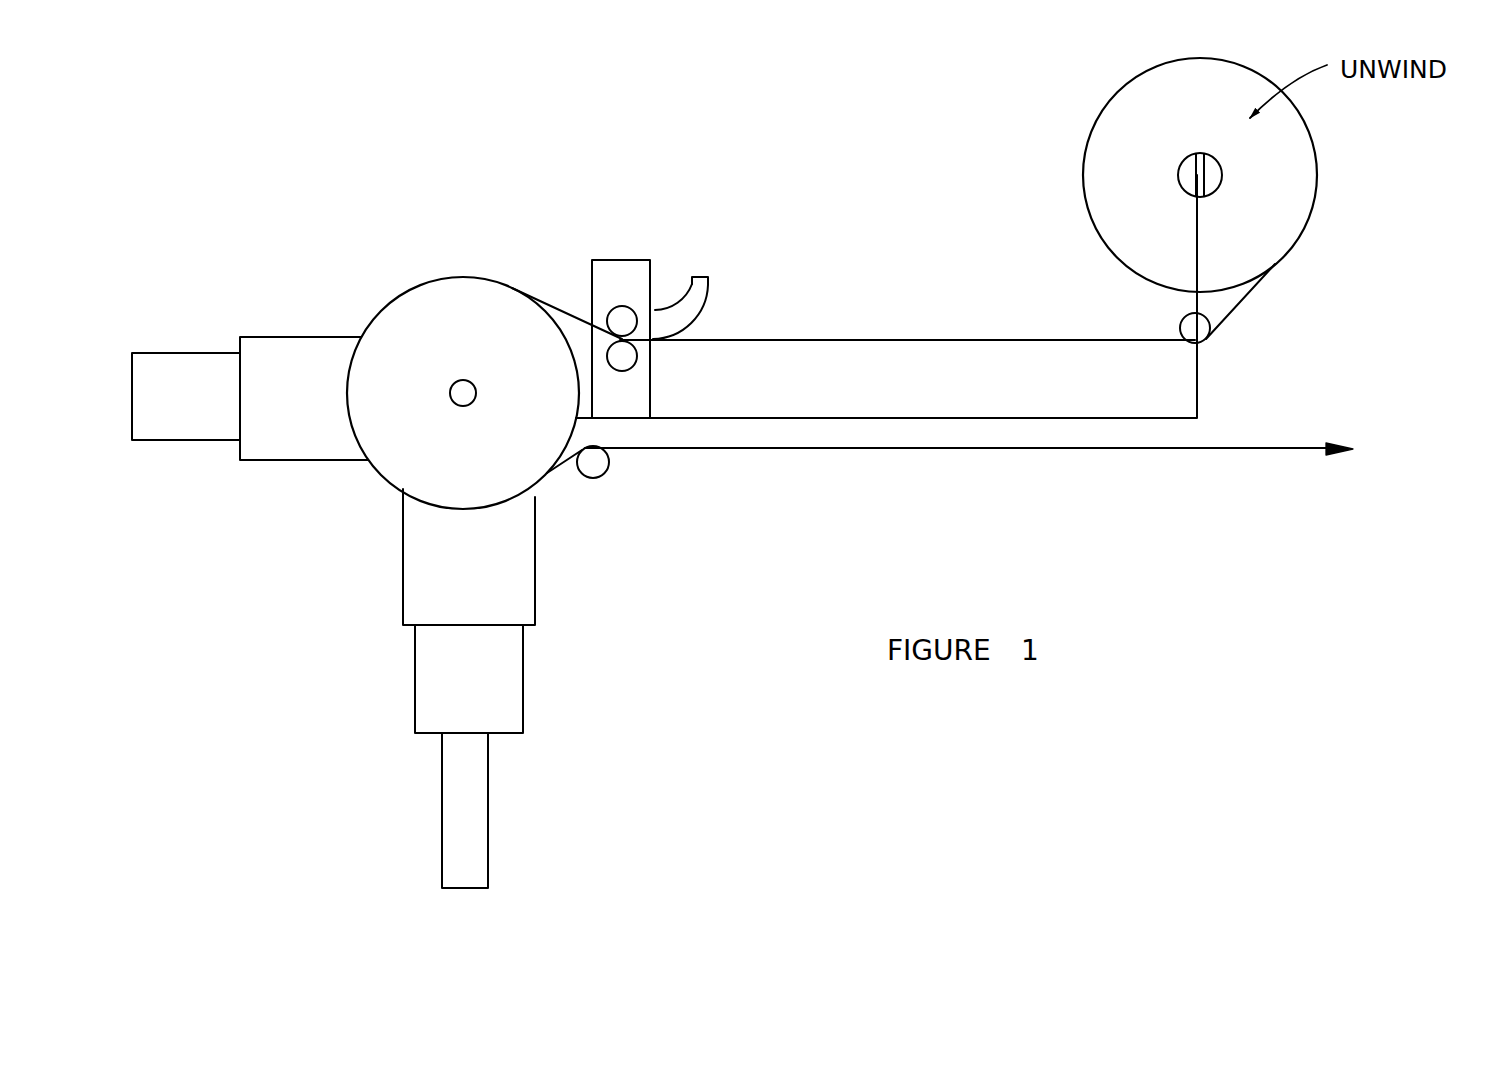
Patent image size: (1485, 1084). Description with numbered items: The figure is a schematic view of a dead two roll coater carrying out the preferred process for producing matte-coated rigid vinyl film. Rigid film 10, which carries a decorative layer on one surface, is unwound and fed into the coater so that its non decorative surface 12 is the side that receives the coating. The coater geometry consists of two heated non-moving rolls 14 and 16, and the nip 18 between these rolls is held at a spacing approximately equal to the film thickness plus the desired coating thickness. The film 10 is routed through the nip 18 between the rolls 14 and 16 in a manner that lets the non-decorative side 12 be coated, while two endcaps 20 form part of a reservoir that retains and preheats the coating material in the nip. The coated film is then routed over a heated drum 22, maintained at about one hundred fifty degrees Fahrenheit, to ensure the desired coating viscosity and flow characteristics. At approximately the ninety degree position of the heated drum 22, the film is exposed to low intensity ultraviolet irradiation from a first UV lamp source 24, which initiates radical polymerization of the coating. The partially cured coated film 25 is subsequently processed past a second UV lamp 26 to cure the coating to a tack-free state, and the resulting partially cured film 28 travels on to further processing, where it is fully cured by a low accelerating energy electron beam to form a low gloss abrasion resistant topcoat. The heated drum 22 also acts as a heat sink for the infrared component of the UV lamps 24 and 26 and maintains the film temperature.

The rigid film 10 is at (750, 334).
The non decorative surface 12 is at (830, 340).
The heated non-moving roll 14 is at (634, 304).
The heated non-moving roll 16 is at (640, 359).
The nip 18 is at (613, 320).
The endcaps 20 is at (709, 287).
The heated drum 22 is at (444, 326).
The first UV lamp source 24 is at (223, 443).
The partially cured coated film 25 is at (383, 478).
The second UV lamp 26 is at (421, 571).
The partially cured film 28 is at (1036, 450).